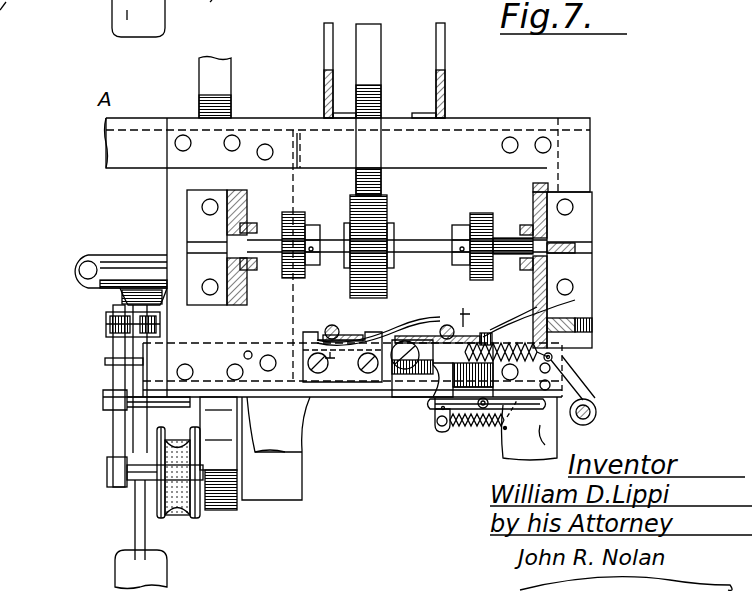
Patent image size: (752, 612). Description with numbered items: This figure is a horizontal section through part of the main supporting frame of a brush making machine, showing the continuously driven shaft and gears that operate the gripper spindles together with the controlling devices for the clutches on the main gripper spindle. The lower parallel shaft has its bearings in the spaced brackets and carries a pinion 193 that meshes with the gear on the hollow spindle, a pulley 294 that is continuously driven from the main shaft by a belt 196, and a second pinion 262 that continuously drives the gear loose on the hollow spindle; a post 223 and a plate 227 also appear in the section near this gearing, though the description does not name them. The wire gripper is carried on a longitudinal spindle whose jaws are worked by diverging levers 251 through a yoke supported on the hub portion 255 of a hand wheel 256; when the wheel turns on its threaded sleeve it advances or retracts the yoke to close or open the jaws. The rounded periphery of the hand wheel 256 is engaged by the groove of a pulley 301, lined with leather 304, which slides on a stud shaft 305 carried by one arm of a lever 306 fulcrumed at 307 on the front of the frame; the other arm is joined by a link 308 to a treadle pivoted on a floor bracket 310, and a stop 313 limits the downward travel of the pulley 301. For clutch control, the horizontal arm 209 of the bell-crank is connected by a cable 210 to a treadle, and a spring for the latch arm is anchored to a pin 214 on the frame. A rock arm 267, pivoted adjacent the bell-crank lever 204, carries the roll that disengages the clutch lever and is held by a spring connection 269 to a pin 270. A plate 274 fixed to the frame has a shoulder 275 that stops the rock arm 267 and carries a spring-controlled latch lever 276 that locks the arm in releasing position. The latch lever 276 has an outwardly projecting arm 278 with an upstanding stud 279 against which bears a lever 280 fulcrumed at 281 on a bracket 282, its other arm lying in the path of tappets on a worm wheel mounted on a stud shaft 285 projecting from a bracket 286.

The pinion 193 is at (302, 212).
The belt 196 is at (373, 38).
The bell-crank lever 204 is at (342, 343).
The horizontal arm of the bell-crank 209 is at (402, 340).
The cable 210 is at (478, 305).
The pin 214 is at (250, 351).
The post 223 is at (324, 90).
The plate 227 is at (487, 333).
The diverging levers 251 is at (8, 8).
The hub portion 255 is at (138, 18).
The hand wheel 256 is at (212, 0).
The pinion 262 is at (480, 215).
The rock arm 267 is at (483, 320).
The spring connection 269 is at (592, 325).
The pin 270 is at (552, 358).
The plate 274 is at (433, 390).
The shoulder 275 is at (575, 300).
The latch lever 276 is at (400, 330).
The outwardly projecting arm 278 is at (440, 431).
The upstanding stud 279 is at (440, 424).
The lever 280 is at (427, 402).
The fulcrum 281 is at (483, 409).
The bracket 282 is at (494, 429).
The stud shaft 285 is at (597, 412).
The bracket 286 is at (587, 385).
The pulley 294 is at (385, 197).
The pulley 301 is at (160, 488).
The leather 304 is at (157, 510).
The stud shaft 305 is at (97, 479).
The lever 306 is at (113, 440).
The fulcrum 307 is at (103, 401).
The link 308 is at (157, 317).
The floor bracket 310 is at (72, 272).
The stop 313 is at (107, 362).